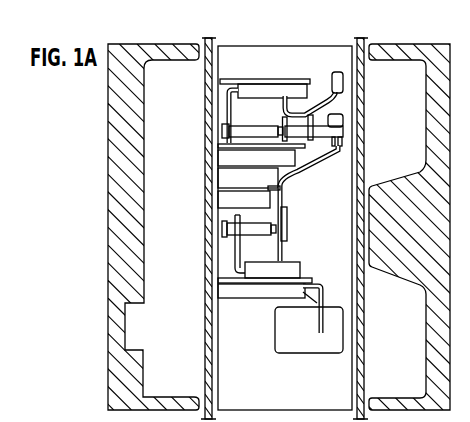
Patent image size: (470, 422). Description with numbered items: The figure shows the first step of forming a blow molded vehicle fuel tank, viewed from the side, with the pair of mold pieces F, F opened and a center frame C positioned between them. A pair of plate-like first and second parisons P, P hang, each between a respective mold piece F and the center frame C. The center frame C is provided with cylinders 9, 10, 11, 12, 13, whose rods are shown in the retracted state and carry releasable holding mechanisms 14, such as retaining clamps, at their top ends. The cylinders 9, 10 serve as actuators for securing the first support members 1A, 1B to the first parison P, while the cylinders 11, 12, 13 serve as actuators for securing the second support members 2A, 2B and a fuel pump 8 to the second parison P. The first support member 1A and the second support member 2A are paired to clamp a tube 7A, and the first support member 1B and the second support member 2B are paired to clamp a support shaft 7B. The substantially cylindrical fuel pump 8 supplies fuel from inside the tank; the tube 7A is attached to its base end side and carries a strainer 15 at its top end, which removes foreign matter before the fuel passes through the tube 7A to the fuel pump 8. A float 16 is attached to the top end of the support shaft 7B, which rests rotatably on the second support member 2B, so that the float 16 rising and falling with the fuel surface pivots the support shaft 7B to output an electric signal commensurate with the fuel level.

The first support member 1A is at (224, 231).
The first support member 1B is at (224, 131).
The second support member 2A is at (290, 223).
The second support member 2B is at (344, 134).
The tube 7A is at (283, 246).
The support shaft 7B is at (288, 88).
The fuel pump 8 is at (292, 343).
The cylinder 9 is at (260, 267).
The cylinder 10 is at (254, 90).
The cylinder 11 is at (232, 196).
The cylinder 12 is at (232, 157).
The cylinder 13 is at (230, 290).
The releasable holding mechanism 14 is at (313, 330).
The strainer 15 is at (344, 120).
The float 16 is at (344, 79).
The center frame C is at (318, 46).
The mold piece F is at (113, 260).
The parison P is at (204, 352).